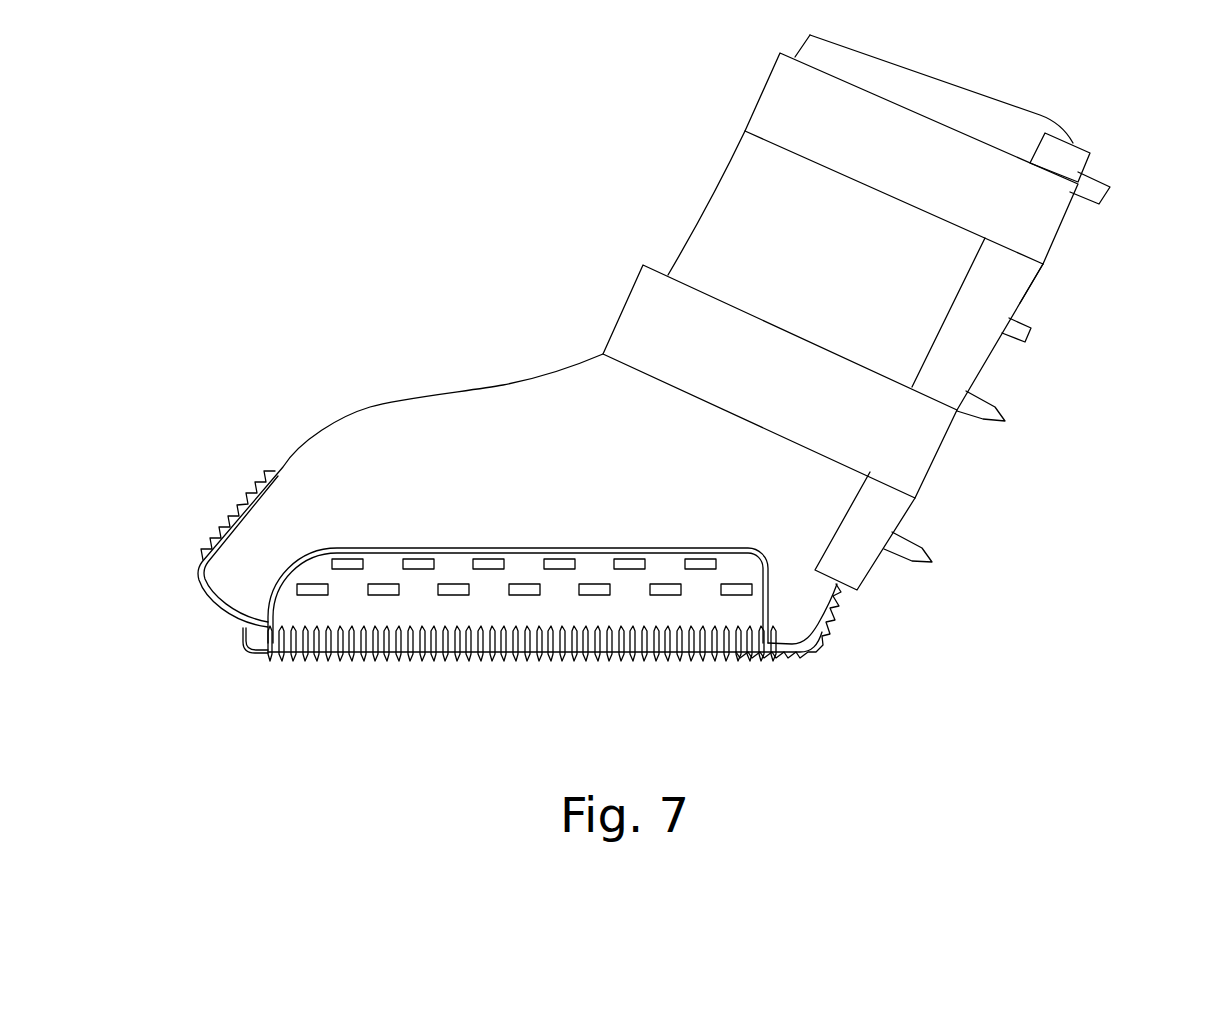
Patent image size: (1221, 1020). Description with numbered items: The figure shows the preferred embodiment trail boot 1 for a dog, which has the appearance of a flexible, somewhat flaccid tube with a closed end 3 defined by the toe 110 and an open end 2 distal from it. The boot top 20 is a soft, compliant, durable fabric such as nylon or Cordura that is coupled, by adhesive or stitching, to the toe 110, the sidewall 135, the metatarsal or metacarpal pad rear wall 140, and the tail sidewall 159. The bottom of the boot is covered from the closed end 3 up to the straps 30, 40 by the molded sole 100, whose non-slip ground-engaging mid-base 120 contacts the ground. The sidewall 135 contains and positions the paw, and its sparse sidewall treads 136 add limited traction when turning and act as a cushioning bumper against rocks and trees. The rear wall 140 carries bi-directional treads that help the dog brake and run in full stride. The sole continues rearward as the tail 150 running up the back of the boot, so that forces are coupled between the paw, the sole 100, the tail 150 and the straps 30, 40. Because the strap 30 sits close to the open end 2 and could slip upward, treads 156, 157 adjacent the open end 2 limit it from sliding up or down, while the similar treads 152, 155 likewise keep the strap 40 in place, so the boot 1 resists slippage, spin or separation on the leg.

The trail boot 1 is at (423, 160).
The open end 2 is at (938, 74).
The closed end 3 is at (282, 462).
The boot top 20 is at (512, 480).
The strap 30 is at (805, 128).
The strap 40 is at (680, 350).
The molded sole 100 is at (877, 614).
The toe 110 is at (233, 520).
The mid-base 120 is at (505, 666).
The sidewall 135 is at (576, 625).
The sidewall treads 136 is at (419, 566).
The metatarsal or metacarpal pad rear wall 140 is at (819, 643).
The tail 150 is at (990, 355).
The tread 152 is at (918, 553).
The tread 155 is at (990, 419).
The tread 156 is at (1030, 332).
The tread 157 is at (1098, 186).
The tail sidewall 159 is at (1010, 285).